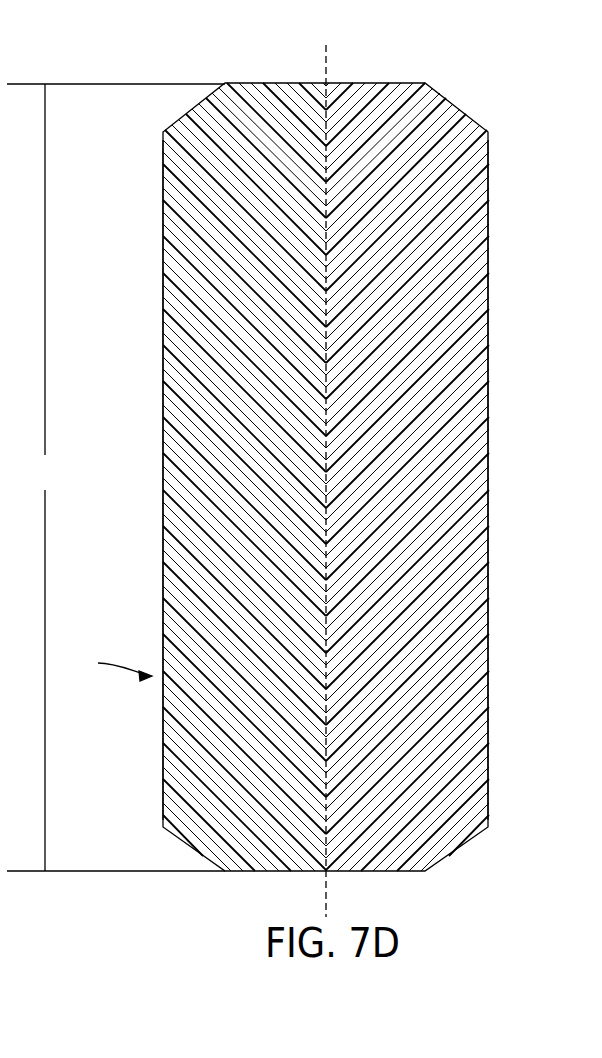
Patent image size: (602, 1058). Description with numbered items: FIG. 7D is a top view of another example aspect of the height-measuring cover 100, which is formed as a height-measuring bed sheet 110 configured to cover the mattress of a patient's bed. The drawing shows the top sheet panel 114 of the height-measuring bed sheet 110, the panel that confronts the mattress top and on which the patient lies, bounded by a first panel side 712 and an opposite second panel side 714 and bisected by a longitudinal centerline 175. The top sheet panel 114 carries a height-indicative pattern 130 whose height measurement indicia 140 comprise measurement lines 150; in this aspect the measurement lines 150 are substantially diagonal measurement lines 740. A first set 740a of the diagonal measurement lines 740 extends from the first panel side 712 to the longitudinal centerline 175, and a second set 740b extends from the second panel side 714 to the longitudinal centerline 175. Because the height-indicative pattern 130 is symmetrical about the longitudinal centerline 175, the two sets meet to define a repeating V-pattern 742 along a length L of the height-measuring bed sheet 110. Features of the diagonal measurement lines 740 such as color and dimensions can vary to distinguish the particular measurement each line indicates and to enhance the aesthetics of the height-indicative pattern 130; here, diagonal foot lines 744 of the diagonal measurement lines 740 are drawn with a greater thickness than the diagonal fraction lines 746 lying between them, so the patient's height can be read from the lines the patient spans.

The height-measuring cover 100 is at (376, 456).
The height-measuring bed sheet 110 is at (524, 149).
The top sheet panel 114 is at (430, 732).
The height-indicative pattern 130 is at (425, 435).
The height measurement indicia 140 is at (428, 585).
The measurement lines 150 is at (334, 477).
The longitudinal centerline 175 is at (327, 76).
The first panel side 712 is at (163, 568).
The second panel side 714 is at (490, 655).
The diagonal measurement lines 740 is at (334, 477).
The first set of diagonal measurement lines 740a is at (193, 273).
The second set of diagonal measurement lines 740b is at (452, 120).
The repeating V-pattern 742 is at (109, 664).
The diagonal foot lines 744 is at (253, 287).
The diagonal fraction lines 746 is at (242, 732).
The length L is at (116, 477).